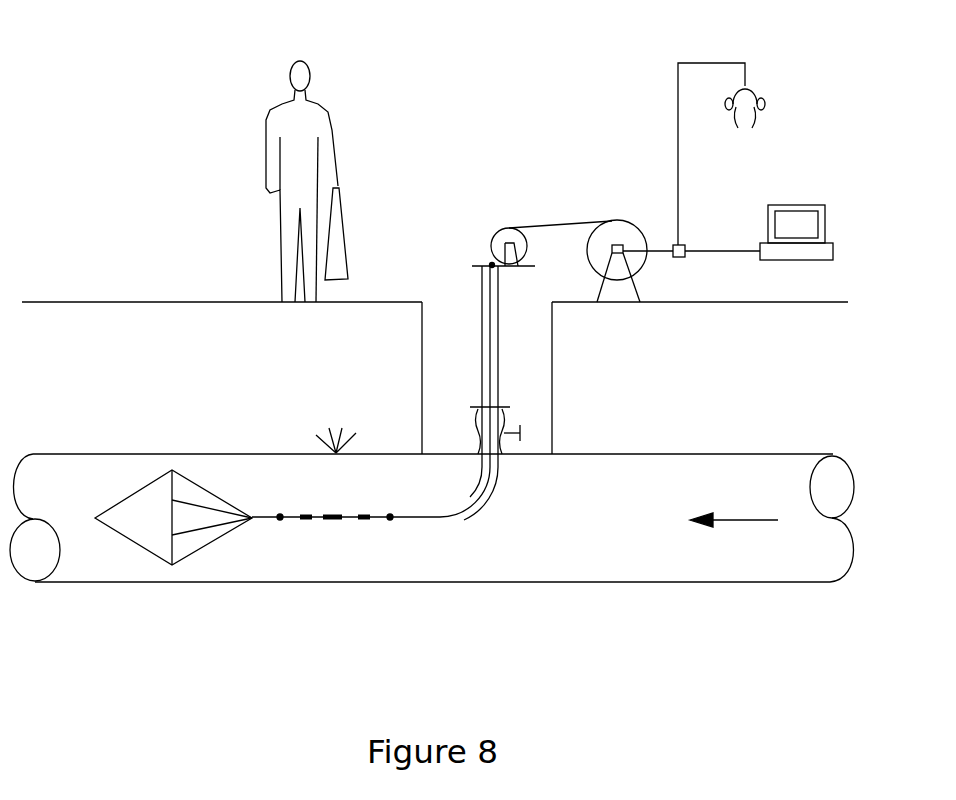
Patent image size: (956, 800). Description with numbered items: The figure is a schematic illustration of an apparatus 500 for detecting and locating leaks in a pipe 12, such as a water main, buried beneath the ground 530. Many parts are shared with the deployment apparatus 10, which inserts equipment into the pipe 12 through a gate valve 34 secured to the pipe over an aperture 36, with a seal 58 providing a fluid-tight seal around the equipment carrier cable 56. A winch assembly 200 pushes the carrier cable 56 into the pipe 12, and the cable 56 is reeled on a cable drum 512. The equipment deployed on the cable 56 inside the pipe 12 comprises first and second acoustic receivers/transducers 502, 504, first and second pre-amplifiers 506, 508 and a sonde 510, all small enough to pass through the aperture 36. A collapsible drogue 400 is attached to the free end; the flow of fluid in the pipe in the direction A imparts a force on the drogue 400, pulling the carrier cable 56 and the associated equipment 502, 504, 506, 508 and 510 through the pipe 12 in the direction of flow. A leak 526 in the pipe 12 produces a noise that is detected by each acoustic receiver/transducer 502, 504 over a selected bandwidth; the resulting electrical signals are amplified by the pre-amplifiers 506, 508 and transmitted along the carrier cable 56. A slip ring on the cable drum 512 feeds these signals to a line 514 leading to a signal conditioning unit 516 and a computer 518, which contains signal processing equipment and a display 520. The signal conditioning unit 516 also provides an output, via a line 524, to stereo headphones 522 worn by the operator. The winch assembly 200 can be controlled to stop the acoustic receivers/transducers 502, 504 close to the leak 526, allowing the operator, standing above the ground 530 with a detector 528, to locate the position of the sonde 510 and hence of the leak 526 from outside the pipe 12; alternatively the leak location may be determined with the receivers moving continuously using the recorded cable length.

The apparatus for detecting and/or locating leaks 500 is at (543, 80).
The ground 530 is at (128, 298).
The detector 528 is at (340, 222).
The winch assembly 200 is at (492, 233).
The seal 58 is at (492, 265).
The apparatus for deploying equipment 10 is at (480, 305).
The equipment carrier cable 56 is at (537, 225).
The cable drum 512 is at (612, 232).
The line 514 is at (657, 258).
The signal conditioning unit 516 is at (675, 245).
The computer 518 is at (805, 262).
The display 520 is at (805, 205).
The stereo headphones 522 is at (768, 98).
The line 524 is at (677, 106).
The gate valve 34 is at (533, 418).
The aperture 36 is at (503, 461).
The leak 526 is at (316, 430).
The pipe 12 is at (557, 582).
The direction of fluid flow A is at (728, 524).
The drogue 400 is at (120, 540).
The first pre-amplifier 506 is at (280, 520).
The first acoustic receiver/transducer 502 is at (305, 520).
The sonde 510 is at (332, 525).
The second acoustic receiver/transducer 504 is at (362, 520).
The second pre-amplifier 508 is at (390, 520).